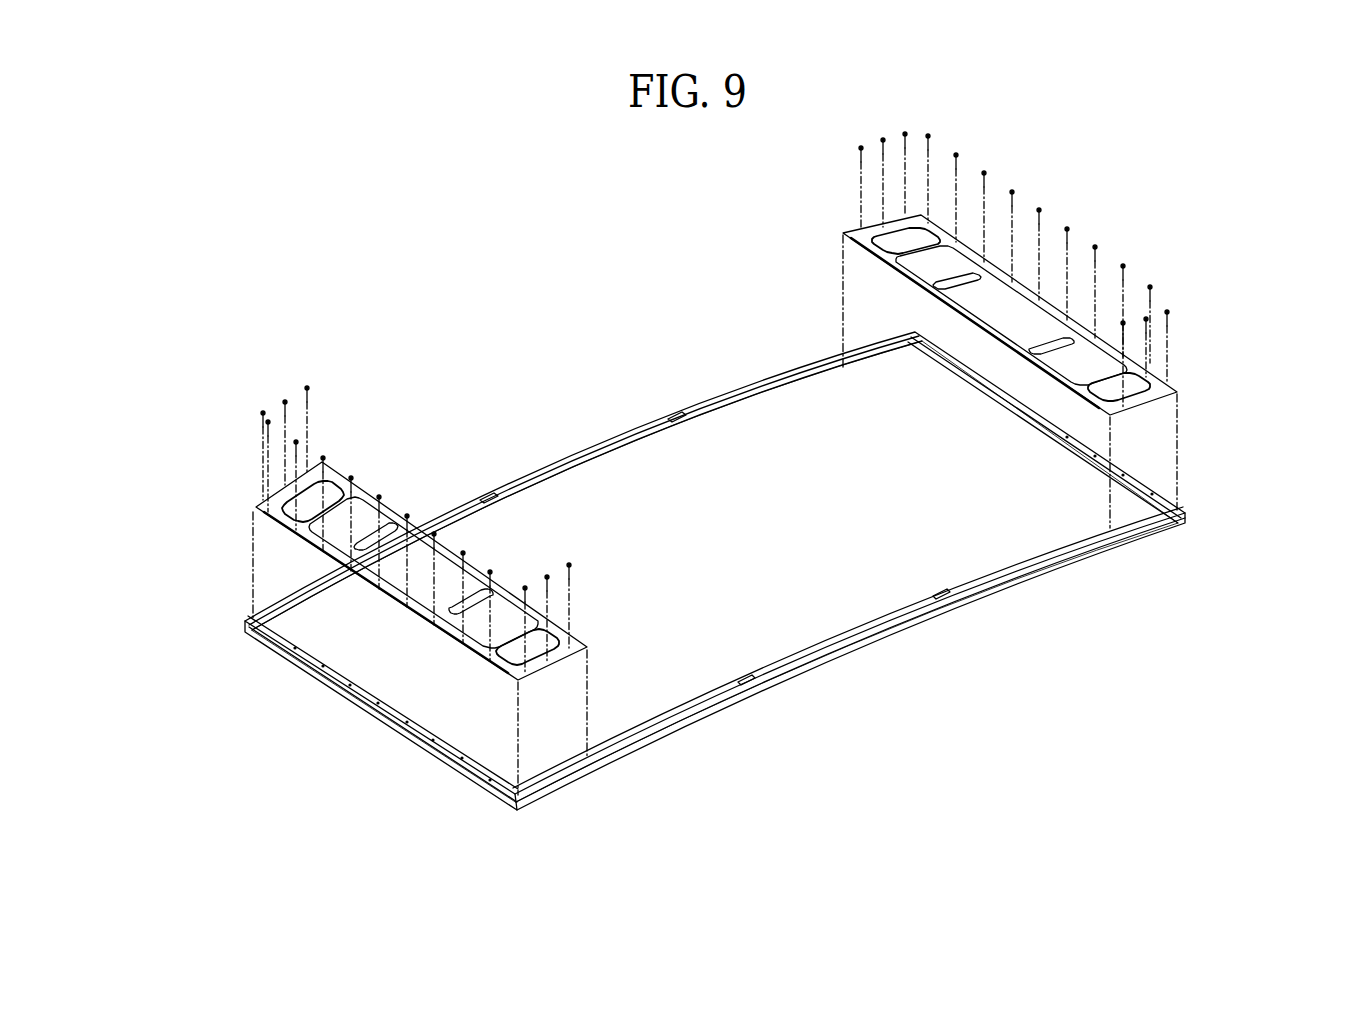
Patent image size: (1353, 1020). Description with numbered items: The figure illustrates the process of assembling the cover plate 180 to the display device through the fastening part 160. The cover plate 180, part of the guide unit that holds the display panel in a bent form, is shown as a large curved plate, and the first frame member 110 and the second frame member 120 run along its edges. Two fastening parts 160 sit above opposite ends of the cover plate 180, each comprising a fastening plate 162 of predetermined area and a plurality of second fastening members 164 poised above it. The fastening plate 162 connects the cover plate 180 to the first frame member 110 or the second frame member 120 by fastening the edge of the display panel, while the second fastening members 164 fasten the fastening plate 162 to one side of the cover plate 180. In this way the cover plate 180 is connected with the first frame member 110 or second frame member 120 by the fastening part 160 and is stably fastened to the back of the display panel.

The first frame member 110 is at (826, 641).
The second frame member 120 is at (345, 677).
The fastening part 160 is at (701, 463).
The fastening plate 162 is at (256, 507).
The second fastening member 164 is at (266, 422).
The cover plate 180 is at (897, 556).